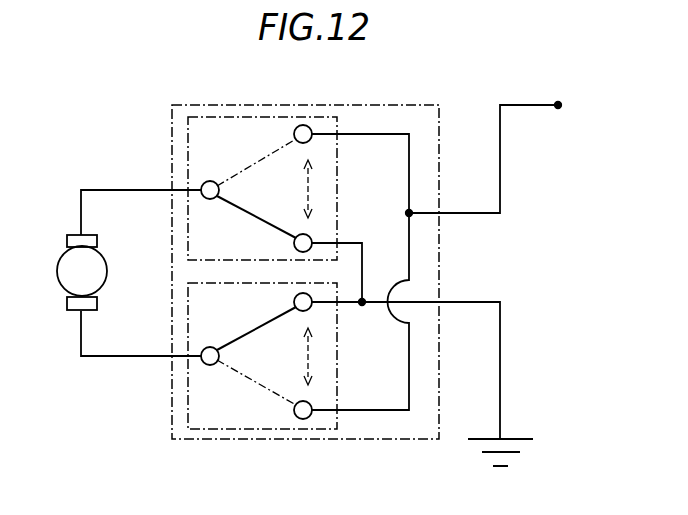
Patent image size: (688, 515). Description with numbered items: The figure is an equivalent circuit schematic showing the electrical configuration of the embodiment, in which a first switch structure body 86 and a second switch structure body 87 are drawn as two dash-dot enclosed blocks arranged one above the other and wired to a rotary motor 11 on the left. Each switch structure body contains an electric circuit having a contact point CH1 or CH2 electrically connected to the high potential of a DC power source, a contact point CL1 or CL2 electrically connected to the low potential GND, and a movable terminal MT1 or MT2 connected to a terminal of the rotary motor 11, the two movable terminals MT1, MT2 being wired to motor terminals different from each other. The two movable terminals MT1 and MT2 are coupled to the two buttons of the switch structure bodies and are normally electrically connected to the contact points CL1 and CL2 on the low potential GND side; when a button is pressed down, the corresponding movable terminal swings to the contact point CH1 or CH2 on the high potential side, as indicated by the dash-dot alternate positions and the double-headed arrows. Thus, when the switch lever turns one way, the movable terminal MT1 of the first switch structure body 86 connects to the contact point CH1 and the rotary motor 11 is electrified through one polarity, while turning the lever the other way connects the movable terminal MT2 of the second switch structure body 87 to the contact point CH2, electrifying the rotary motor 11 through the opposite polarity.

The rotary motor 11 is at (53, 268).
The first switch structure body 86 is at (233, 115).
The second switch structure body 87 is at (247, 429).
The contact point CH1 is at (298, 124).
The contact point CL1 is at (294, 241).
The contact point CL2 is at (294, 302).
The contact point CH2 is at (302, 420).
The movable terminal MT1 is at (258, 166).
The movable terminal MT2 is at (257, 336).
The low potential GND is at (520, 434).